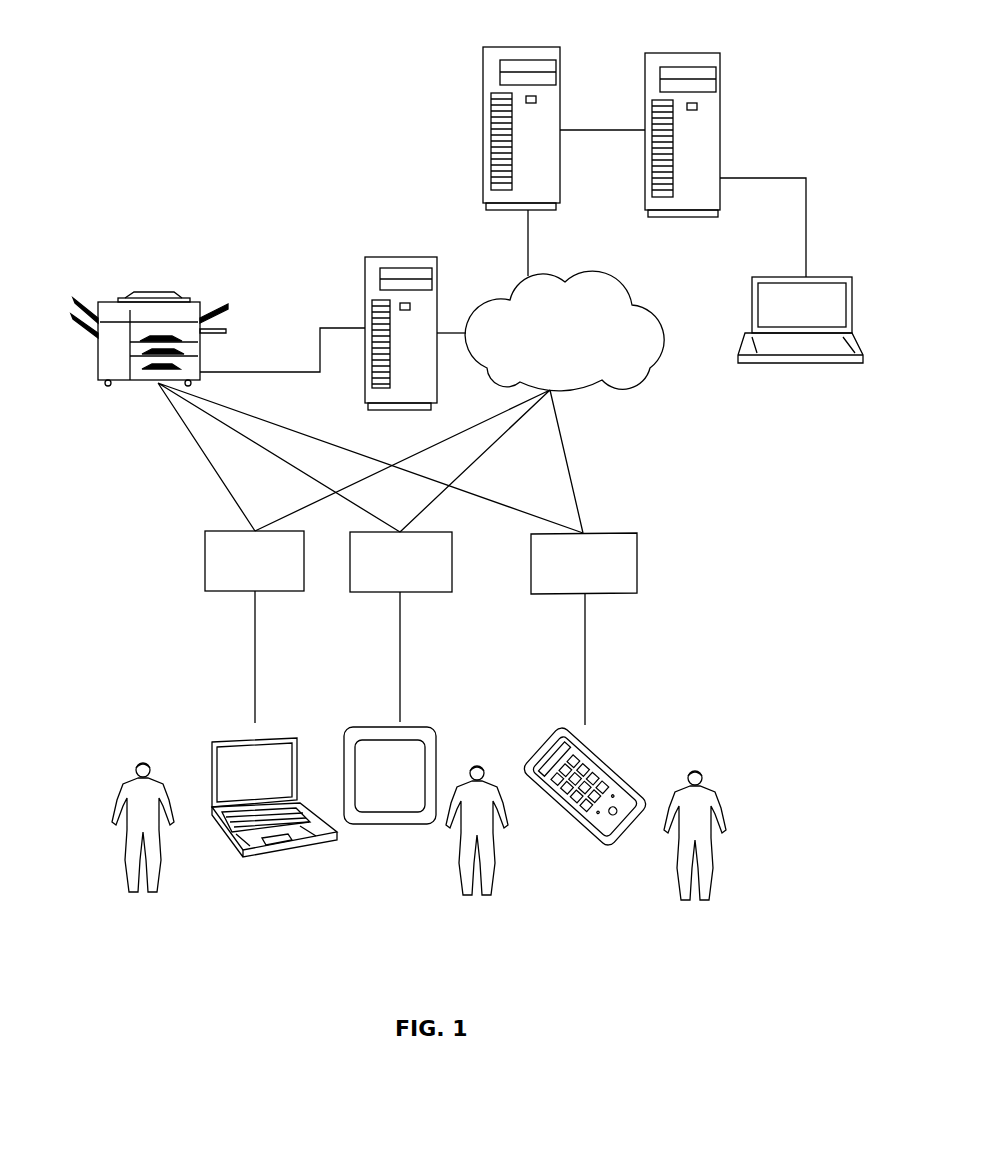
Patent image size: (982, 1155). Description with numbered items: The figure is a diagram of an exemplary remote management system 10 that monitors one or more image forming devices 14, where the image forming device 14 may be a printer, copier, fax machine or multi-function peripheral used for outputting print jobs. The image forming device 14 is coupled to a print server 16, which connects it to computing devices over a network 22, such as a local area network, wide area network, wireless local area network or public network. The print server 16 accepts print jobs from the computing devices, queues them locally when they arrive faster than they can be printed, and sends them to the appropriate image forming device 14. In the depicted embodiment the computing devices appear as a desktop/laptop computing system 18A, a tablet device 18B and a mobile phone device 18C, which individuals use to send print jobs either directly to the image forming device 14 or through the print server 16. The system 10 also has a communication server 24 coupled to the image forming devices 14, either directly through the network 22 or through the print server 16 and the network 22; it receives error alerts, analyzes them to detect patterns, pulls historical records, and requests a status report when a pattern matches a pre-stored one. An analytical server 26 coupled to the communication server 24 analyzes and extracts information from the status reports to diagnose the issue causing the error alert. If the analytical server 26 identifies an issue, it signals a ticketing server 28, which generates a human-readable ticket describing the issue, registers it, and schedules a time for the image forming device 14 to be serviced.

The remote management system 10 is at (262, 178).
The image forming device 14 is at (97, 358).
The print server 16 is at (402, 257).
The desktop/laptop computing system 18A is at (268, 742).
The tablet device 18B is at (410, 727).
The mobile phone device 18C is at (605, 760).
The network 22 is at (637, 303).
The communication server 24 is at (483, 91).
The analytical server 26 is at (720, 122).
The ticketing server 28 is at (788, 364).